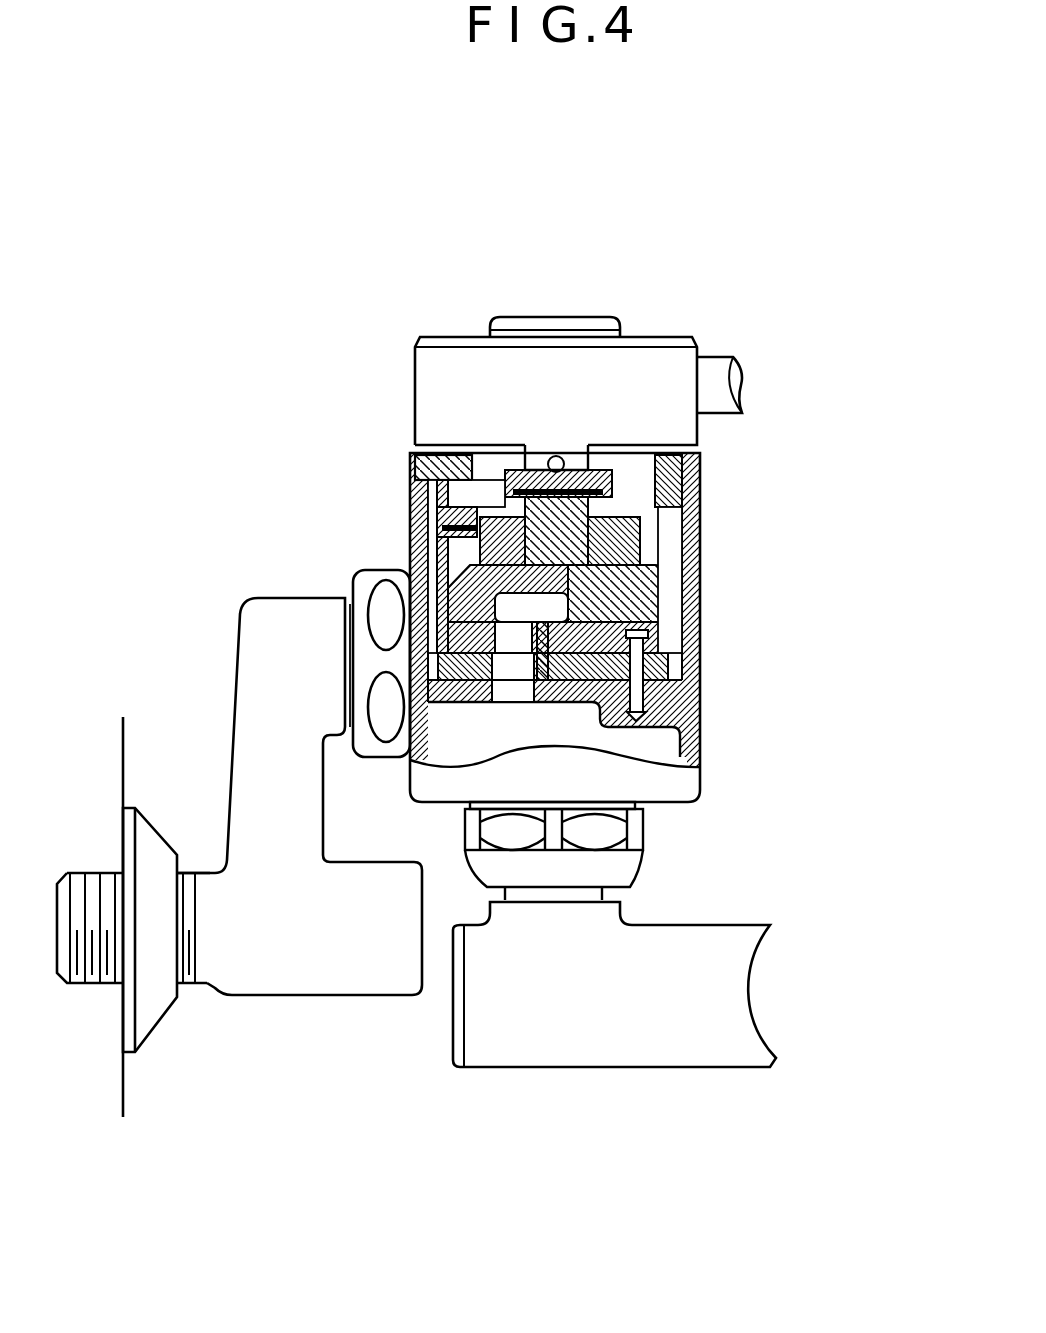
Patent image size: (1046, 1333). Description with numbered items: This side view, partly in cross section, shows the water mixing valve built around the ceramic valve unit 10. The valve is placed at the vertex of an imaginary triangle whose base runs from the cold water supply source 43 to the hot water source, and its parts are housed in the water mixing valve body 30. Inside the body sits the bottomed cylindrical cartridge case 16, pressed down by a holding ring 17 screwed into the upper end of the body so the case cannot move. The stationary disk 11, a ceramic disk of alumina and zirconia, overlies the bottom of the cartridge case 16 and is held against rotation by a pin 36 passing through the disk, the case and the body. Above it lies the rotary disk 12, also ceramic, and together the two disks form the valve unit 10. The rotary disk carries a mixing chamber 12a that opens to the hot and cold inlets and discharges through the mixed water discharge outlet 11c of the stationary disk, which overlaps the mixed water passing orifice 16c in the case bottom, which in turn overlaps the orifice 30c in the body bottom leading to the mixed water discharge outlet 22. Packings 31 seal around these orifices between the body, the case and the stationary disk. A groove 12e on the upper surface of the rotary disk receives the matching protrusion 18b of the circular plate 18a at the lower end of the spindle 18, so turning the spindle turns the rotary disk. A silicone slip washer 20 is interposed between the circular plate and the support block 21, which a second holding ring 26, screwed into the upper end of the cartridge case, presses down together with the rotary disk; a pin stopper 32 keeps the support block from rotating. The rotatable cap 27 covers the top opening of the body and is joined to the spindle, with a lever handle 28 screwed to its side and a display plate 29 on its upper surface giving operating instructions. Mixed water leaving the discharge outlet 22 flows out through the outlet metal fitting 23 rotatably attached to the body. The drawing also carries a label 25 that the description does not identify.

The valve unit 10 is at (732, 568).
The stationary disk 11 is at (896, 635).
The mixed water discharge outlet 11c is at (515, 640).
The rotary disk 12 is at (896, 478).
The mixing chamber 12a is at (400, 567).
The groove 12e is at (718, 410).
The cartridge case 16 is at (896, 706).
The mixed water passing orifice 16c is at (337, 661).
The holding ring 17 is at (390, 384).
The spindle 18 is at (720, 240).
The circular plate 18a is at (339, 555).
The protrusion 18b is at (388, 422).
The slip washer 20 is at (353, 426).
The support block 21 is at (771, 516).
The mixed water discharge outlet 22 is at (517, 738).
The outlet metal fitting 23 is at (618, 1052).
The contact cup 25 is at (575, 460).
The holding ring 26 is at (514, 334).
The rotatable cap 27 is at (435, 350).
The lever handle 28 is at (715, 372).
The display plate 29 is at (563, 333).
The water mixing valve body 30 is at (896, 773).
The orifice 30c is at (515, 688).
The packings 31 is at (651, 760).
The pin stopper 32 is at (383, 489).
The pin 36 is at (735, 744).
The cold water supply source 43 is at (160, 997).